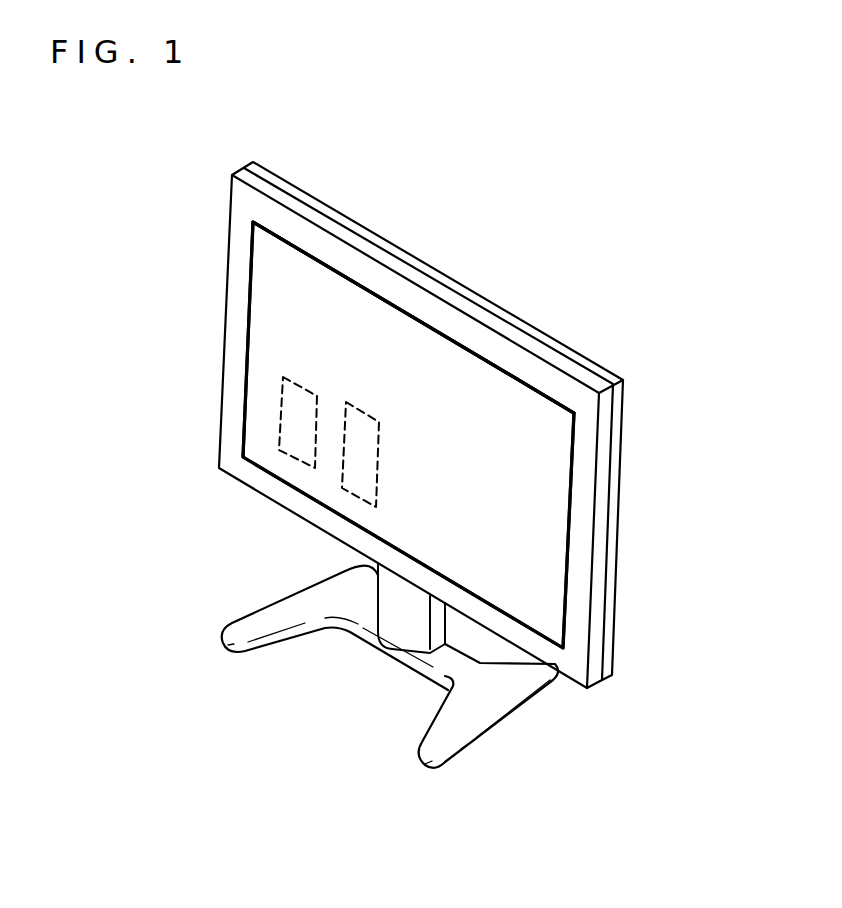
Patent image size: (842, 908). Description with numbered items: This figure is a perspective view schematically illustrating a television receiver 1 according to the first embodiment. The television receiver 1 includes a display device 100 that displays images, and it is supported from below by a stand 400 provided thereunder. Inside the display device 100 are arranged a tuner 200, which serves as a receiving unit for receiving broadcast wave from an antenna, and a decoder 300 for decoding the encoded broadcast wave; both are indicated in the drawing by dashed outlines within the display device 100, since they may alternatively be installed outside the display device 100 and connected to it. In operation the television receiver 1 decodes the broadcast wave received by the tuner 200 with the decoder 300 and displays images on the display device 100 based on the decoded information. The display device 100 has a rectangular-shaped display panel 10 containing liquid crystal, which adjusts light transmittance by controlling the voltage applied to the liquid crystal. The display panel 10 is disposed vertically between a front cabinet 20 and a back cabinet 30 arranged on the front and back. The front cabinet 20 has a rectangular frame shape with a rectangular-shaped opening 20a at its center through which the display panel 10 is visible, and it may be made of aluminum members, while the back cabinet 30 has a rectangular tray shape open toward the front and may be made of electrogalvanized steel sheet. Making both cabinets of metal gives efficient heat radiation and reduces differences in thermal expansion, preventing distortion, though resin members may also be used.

The television receiver 1 is at (561, 267).
The display panel 10 is at (547, 480).
The front cabinet 20 is at (593, 678).
The opening 20a is at (367, 290).
The back cabinet 30 is at (620, 428).
The display device 100 is at (540, 560).
The tuner 200 is at (280, 415).
The decoder 300 is at (350, 493).
The stand 400 is at (276, 642).